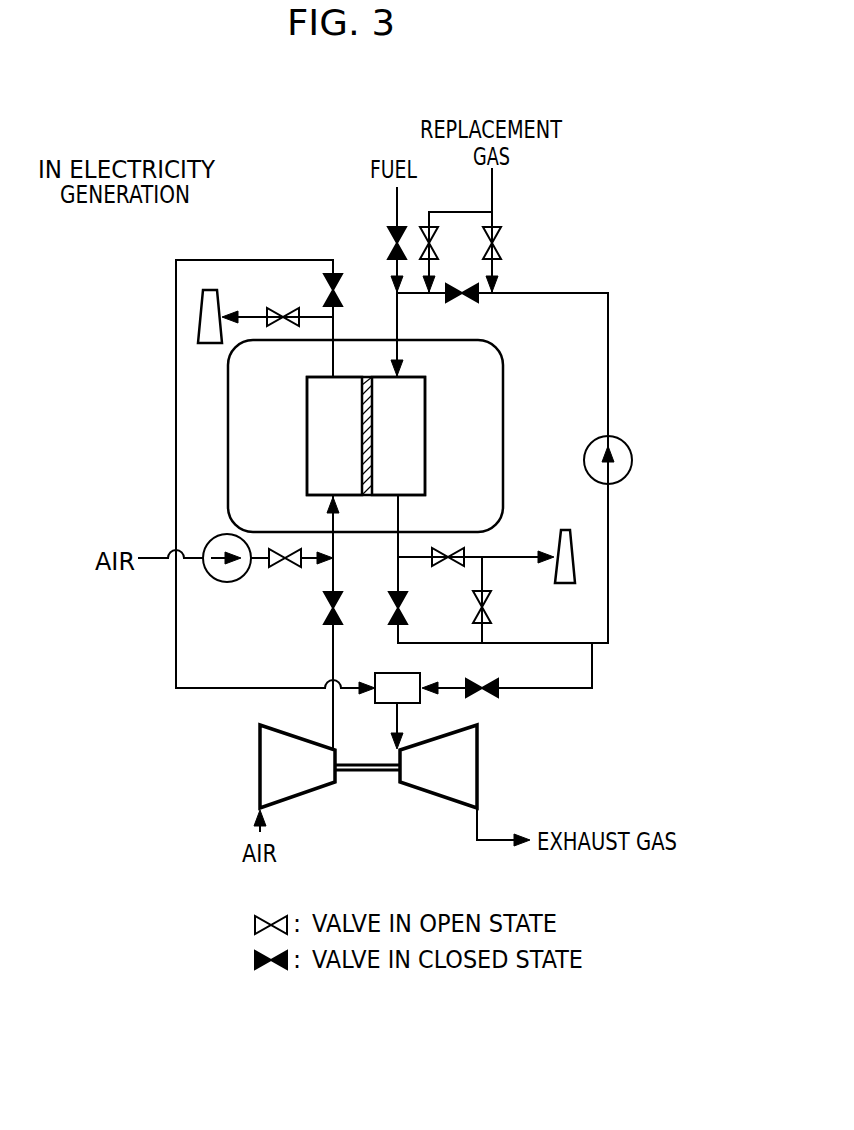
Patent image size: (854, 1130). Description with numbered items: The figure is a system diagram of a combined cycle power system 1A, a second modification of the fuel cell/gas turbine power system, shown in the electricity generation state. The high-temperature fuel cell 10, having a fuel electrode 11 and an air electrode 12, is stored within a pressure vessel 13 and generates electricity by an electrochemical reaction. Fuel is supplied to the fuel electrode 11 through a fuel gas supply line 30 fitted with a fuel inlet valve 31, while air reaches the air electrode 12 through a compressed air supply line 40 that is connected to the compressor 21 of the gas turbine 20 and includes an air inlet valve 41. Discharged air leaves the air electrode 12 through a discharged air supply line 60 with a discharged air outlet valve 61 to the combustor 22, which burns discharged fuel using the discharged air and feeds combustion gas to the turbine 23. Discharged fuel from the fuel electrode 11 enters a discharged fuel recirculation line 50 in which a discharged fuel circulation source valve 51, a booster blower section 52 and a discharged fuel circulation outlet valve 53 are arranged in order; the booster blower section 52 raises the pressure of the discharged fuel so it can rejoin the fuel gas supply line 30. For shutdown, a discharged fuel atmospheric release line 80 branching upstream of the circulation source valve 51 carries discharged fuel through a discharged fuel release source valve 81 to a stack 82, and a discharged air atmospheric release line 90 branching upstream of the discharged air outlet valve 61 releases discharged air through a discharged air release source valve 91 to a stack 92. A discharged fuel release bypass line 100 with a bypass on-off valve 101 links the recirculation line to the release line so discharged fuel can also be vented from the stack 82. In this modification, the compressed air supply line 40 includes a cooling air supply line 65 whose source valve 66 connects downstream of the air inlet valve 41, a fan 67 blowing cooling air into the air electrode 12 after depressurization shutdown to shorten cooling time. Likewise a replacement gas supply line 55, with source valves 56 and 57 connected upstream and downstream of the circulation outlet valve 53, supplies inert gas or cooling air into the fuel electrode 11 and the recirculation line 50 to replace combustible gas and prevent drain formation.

The combined cycle power system 1A is at (628, 270).
The fuel cell 10 is at (438, 404).
The fuel electrode 11 is at (410, 440).
The air electrode 12 is at (326, 434).
The pressure vessel 13 is at (504, 394).
The gas turbine 20 is at (369, 809).
The compressor 21 is at (260, 768).
The combustor 22 is at (385, 673).
The turbine 23 is at (477, 767).
The fuel gas supply line 30 is at (414, 319).
The fuel inlet valve 31 is at (392, 253).
The compressed air supply line 40 is at (320, 668).
The air inlet valve 41 is at (326, 612).
The discharged fuel recirculation line 50 is at (624, 602).
The discharged fuel circulation source valve 51 is at (392, 605).
The booster blower section 52 is at (633, 473).
The discharged fuel circulation outlet valve 53 is at (477, 302).
The replacement gas supply line 55 is at (512, 198).
The source valve 56 is at (504, 248).
The source valve 57 is at (434, 260).
The discharged air supply line 60 is at (165, 415).
The discharged air outlet valve 61 is at (339, 270).
The cooling air supply line 65 is at (149, 574).
The source valve 66 is at (274, 568).
The fan 67 is at (213, 581).
The discharged fuel atmospheric release line 80 is at (525, 540).
The discharged fuel release source valve 81 is at (450, 567).
The stack 82 is at (577, 545).
The discharged air atmospheric release line 90 is at (253, 302).
The discharged air release source valve 91 is at (285, 307).
The stack 92 is at (198, 310).
The discharged fuel release bypass line 100 is at (496, 630).
The bypass on-off valve 101 is at (490, 603).